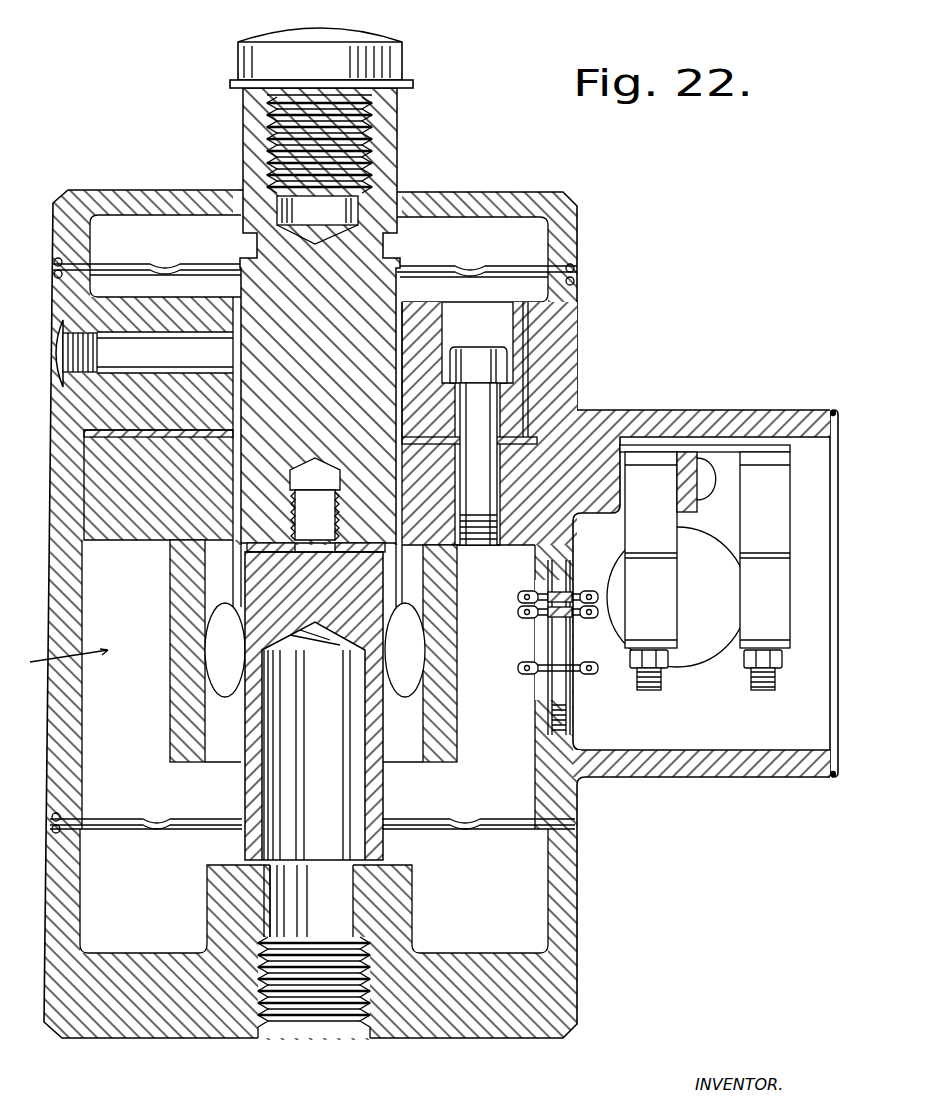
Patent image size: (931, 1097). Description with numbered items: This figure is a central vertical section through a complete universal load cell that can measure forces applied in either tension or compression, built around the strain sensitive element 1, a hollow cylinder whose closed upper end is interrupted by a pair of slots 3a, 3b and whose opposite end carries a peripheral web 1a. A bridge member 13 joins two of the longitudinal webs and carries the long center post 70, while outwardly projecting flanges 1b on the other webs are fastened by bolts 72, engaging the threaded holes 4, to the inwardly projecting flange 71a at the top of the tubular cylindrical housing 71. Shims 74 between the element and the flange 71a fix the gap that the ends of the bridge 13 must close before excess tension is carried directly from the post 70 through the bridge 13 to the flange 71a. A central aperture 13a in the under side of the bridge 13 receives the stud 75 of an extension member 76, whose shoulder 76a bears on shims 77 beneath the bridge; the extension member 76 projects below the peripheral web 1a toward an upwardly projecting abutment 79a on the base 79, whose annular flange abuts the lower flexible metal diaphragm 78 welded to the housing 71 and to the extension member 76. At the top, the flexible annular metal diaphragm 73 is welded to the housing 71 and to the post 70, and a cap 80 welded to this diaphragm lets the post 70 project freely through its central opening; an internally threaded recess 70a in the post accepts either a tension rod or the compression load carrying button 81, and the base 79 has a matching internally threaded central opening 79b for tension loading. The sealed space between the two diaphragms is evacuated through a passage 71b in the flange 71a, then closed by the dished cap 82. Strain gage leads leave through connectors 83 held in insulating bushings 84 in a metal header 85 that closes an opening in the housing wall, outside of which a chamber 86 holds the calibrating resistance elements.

The strain sensitive element 1 is at (64, 660).
The peripheral web 1a is at (180, 760).
The outwardly projecting flanges 1b is at (97, 472).
The slot 3a is at (235, 453).
The slot 3b is at (527, 450).
The screw holes 4 is at (512, 297).
The bridge member 13 is at (260, 518).
The central aperture 13a is at (288, 481).
The center post 70 is at (365, 335).
The internally threaded recess 70a is at (345, 158).
The tubular cylindrical housing 71 is at (50, 740).
The inwardly projecting flange 71a is at (157, 402).
The passage 71b is at (58, 338).
The bolts 72 is at (478, 352).
The flexible annular metal diaphragm 73 is at (174, 262).
The shims 74 is at (508, 418).
The stud 75 is at (307, 505).
The extension member 76 is at (240, 800).
The shoulder 76a is at (425, 549).
The shims 77 is at (357, 557).
The flexible metal diaphragm 78 is at (143, 823).
The base 79 is at (108, 1027).
The abutment 79a is at (400, 893).
The internally threaded central opening 79b is at (332, 1027).
The cap 80 is at (127, 189).
The compression load carrying button 81 is at (352, 46).
The dished cap 82 is at (56, 353).
The connectors 83 is at (520, 612).
The insulating bushings 84 is at (566, 592).
The metal header 85 is at (566, 638).
The chamber 86 is at (660, 745).